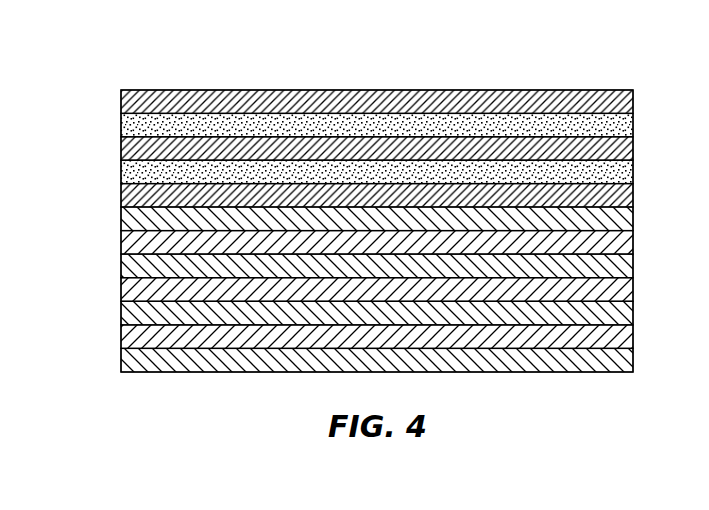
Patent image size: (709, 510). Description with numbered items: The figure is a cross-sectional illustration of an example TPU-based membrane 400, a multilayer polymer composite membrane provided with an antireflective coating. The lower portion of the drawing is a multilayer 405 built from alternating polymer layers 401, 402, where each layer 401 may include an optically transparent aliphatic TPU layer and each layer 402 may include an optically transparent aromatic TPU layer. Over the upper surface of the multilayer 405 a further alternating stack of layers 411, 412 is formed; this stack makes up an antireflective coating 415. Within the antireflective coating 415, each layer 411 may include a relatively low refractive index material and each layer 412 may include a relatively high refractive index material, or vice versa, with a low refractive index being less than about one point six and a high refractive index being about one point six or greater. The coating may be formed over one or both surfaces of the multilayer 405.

The TPU-based membrane 400 is at (147, 54).
The antireflective coating 415 is at (362, 157).
The multilayer 405 is at (360, 299).
The layer 412 is at (625, 175).
The layer 411 is at (625, 193).
The layer 402 is at (625, 338).
The layer 401 is at (625, 358).